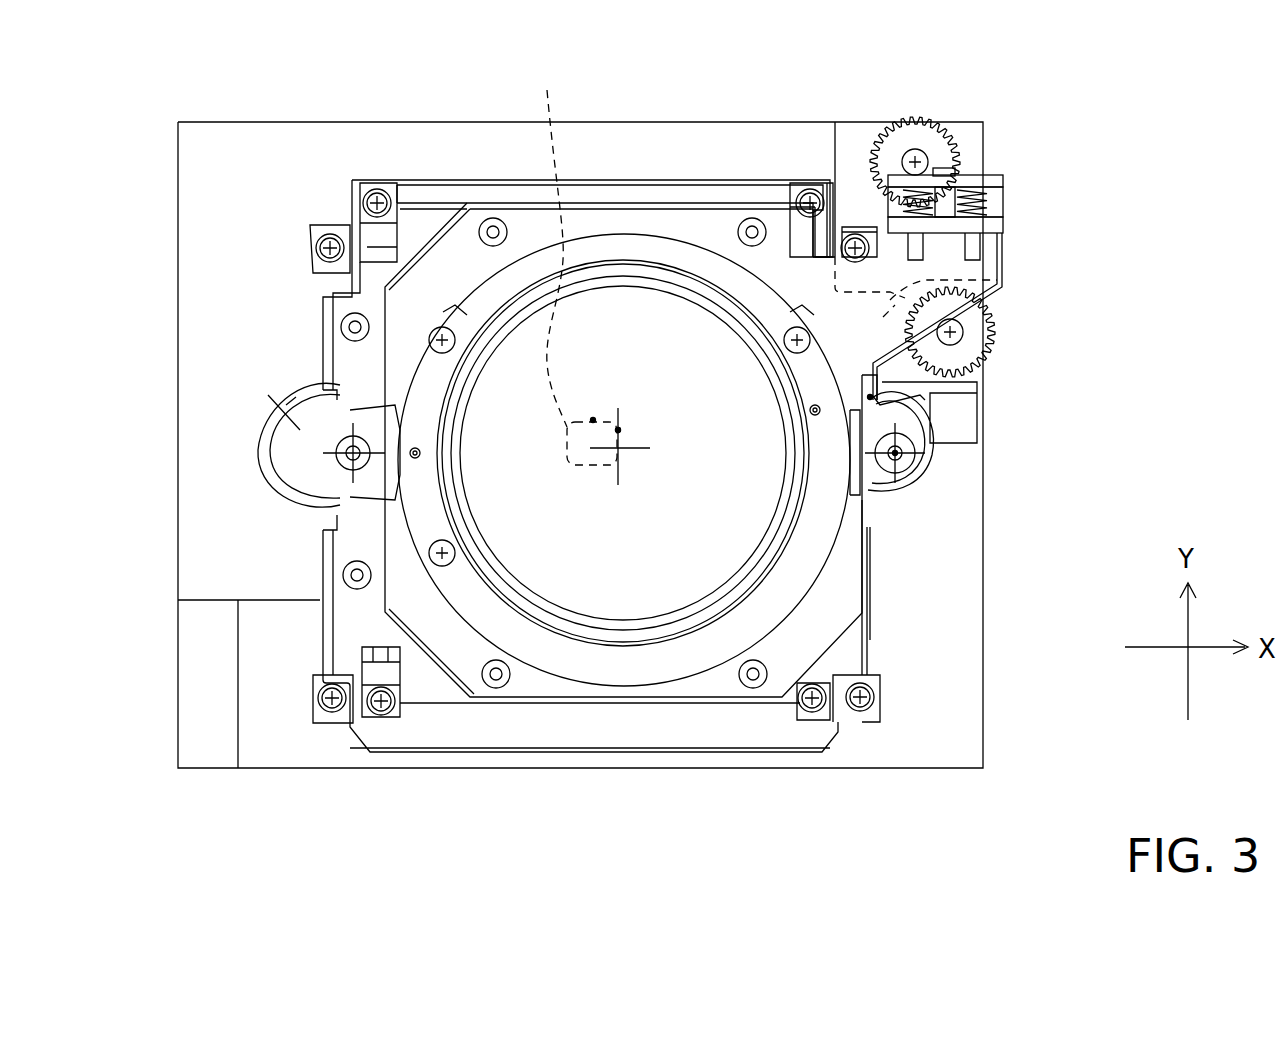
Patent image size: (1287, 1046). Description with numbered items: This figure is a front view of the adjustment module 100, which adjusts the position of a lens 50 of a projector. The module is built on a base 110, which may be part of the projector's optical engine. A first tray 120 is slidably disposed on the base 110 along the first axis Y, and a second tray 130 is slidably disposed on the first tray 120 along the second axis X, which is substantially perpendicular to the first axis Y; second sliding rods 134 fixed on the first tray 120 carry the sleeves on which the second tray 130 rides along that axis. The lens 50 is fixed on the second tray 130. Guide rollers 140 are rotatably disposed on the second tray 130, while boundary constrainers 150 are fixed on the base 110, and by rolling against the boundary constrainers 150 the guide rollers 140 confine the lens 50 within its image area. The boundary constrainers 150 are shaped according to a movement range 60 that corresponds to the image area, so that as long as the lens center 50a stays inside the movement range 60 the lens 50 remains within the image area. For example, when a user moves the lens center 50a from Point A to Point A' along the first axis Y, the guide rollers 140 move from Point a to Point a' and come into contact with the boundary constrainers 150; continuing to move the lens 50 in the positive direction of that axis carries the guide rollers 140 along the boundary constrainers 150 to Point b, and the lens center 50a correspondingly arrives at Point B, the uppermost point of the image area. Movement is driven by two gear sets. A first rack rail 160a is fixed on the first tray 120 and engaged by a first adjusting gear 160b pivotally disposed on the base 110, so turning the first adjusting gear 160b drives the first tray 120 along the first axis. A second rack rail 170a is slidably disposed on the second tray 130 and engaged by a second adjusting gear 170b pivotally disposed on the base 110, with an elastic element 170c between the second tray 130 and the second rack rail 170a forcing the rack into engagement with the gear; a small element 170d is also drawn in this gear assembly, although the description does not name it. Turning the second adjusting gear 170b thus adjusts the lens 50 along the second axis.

The adjustment module 100 is at (668, 452).
The base 110 is at (1028, 762).
The first tray 120 is at (630, 722).
The second tray 130 is at (835, 597).
The second sliding rod 134 is at (413, 222).
The guide roller 140 is at (900, 460).
The boundary constrainer 150 is at (895, 453).
The first rack rail 160a is at (1000, 283).
The first adjusting gear 160b is at (990, 332).
The second rack rail 170a is at (1003, 180).
The second adjusting gear 170b is at (935, 120).
The elastic element 170c is at (1003, 205).
The tab 170d is at (948, 168).
The lens 50 is at (555, 590).
The lens center 50a is at (622, 437).
The movement range 60 is at (577, 261).
The Point A is at (635, 458).
The Point A' is at (628, 390).
The Point B is at (593, 420).
The Point a is at (1020, 473).
The Point a' is at (965, 391).
The Point b is at (870, 397).